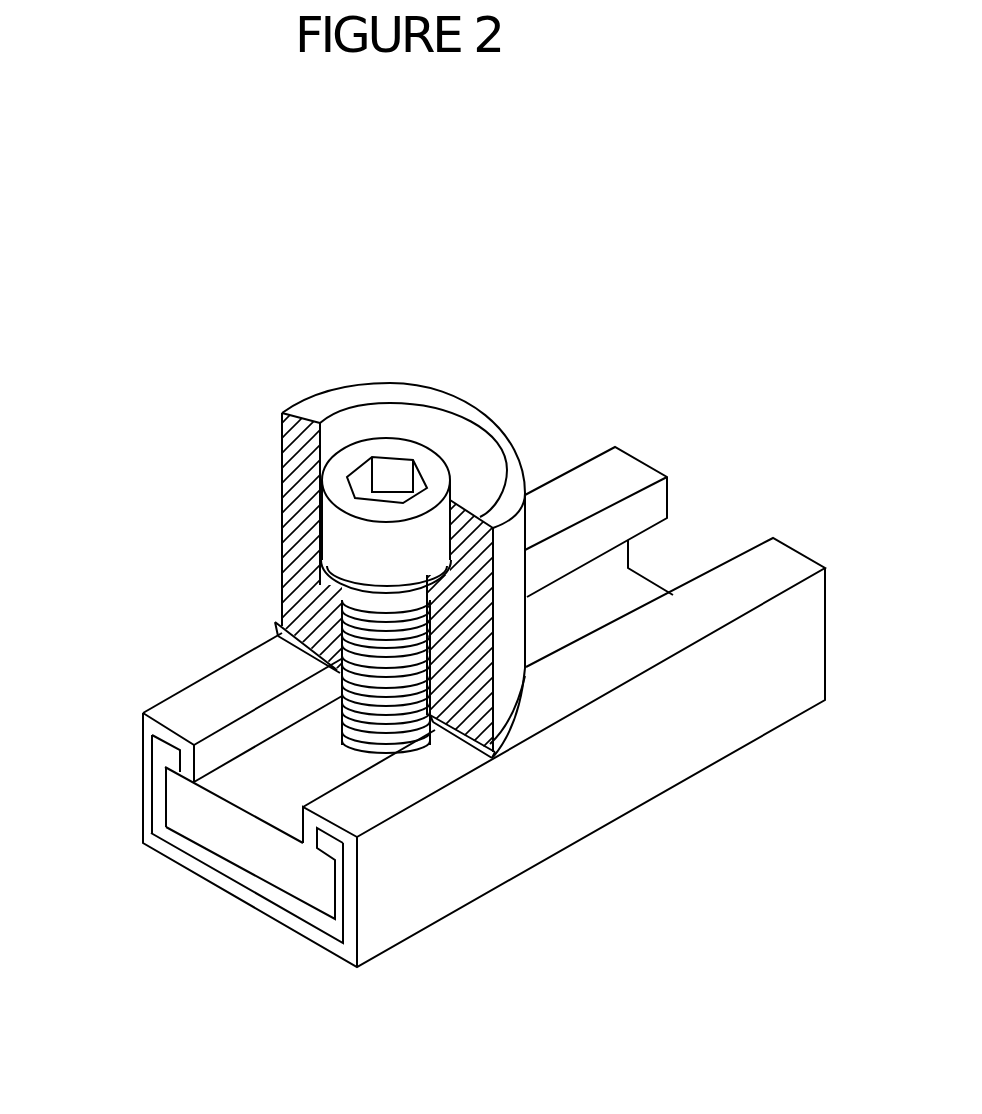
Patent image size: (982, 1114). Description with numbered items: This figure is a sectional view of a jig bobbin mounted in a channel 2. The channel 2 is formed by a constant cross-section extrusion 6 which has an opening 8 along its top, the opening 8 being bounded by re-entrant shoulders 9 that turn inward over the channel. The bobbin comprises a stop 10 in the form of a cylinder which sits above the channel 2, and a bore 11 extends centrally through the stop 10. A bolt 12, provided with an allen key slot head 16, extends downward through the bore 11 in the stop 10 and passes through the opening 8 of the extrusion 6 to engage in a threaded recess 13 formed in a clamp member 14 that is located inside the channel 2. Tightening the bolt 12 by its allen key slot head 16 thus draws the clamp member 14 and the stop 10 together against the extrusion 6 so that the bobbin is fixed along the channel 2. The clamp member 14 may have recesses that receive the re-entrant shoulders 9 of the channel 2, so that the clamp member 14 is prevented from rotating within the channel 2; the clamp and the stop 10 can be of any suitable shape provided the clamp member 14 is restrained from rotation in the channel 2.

The channel 2 is at (603, 867).
The constant cross-section extrusion 6 is at (603, 782).
The opening 8 is at (713, 513).
The re-entrant shoulders 9 is at (179, 763).
The stop 10 is at (508, 625).
The bore 11 is at (372, 611).
The bolt 12 is at (390, 700).
The threaded recess 13 is at (358, 760).
The clamp member 14 is at (268, 795).
The allen key slot head 16 is at (340, 488).